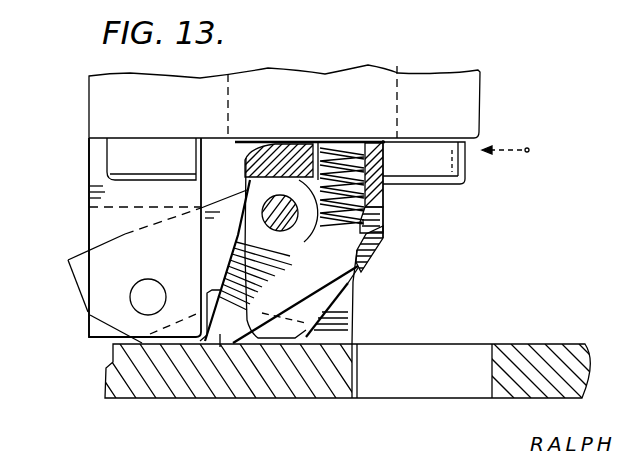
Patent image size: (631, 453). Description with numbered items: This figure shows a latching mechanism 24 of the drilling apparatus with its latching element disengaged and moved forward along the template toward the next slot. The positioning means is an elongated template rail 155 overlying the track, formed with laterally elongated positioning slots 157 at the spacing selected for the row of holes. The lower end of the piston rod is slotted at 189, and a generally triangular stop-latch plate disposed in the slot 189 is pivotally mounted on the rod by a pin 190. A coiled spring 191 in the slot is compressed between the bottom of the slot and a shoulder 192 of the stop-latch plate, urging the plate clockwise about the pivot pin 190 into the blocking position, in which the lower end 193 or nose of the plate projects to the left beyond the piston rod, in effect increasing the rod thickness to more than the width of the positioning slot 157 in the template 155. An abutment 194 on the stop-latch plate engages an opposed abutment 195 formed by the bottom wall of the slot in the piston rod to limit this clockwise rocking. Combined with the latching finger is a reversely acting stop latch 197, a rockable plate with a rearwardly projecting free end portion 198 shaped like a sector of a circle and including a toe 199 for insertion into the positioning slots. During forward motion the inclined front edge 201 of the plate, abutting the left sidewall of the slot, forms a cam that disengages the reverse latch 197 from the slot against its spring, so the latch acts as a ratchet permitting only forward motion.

The second latching mechanism 24 is at (78, 114).
The template rail 155 is at (530, 365).
The positioning slot 157 is at (415, 377).
The slot in piston rod 189 is at (378, 221).
The pivot pin 190 is at (262, 222).
The coiled spring 191 is at (384, 164).
The shoulder 192 is at (387, 241).
The lower end or nose of stop-latch plate 193 is at (218, 336).
The abutment 194 is at (283, 219).
The opposed abutment 195 is at (240, 187).
The reverse latch 197 is at (366, 317).
The rearwardly projecting free end portion 198 is at (343, 300).
The toe 199 is at (352, 337).
The inclined front edge 201 is at (322, 334).